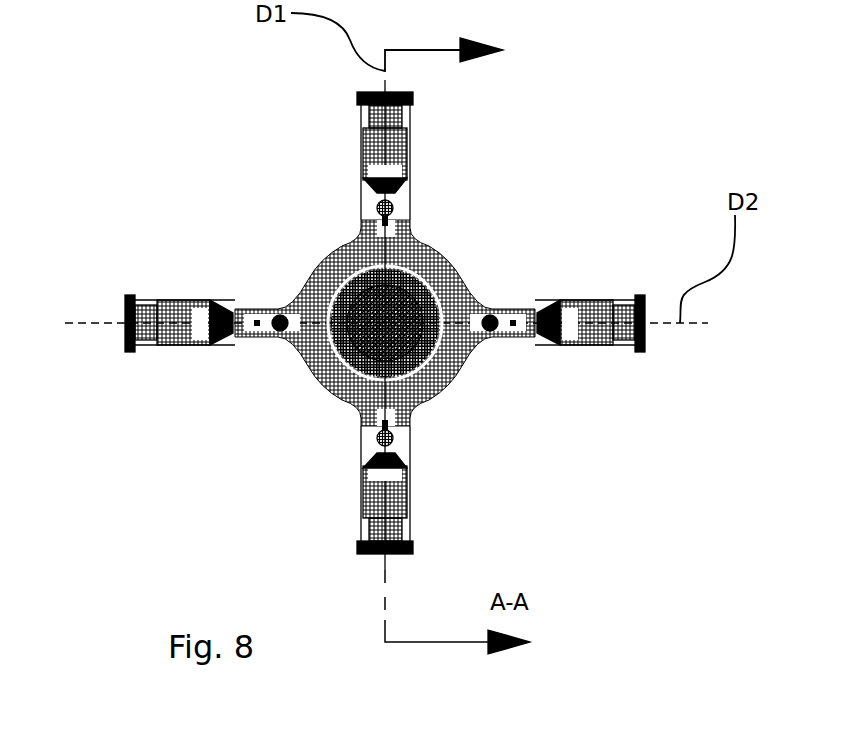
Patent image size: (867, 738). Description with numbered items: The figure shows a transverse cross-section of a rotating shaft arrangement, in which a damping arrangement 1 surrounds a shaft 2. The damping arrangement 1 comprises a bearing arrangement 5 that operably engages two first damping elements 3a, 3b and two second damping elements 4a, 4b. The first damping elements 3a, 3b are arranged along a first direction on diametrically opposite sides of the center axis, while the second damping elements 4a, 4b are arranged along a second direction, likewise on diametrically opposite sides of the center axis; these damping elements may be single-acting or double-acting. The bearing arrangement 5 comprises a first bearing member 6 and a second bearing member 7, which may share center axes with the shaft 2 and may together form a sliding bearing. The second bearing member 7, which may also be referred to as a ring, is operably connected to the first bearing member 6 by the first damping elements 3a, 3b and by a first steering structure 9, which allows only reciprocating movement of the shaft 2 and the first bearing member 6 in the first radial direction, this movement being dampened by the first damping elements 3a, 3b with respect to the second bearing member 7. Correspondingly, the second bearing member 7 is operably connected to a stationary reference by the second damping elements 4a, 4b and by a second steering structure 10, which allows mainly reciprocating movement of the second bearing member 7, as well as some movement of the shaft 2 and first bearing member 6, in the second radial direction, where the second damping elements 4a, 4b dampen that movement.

The damping arrangement 1 is at (168, 98).
The shaft 2 is at (396, 303).
The first damping element 3a is at (372, 147).
The first damping element 3b is at (383, 518).
The second damping element 4a is at (172, 302).
The second damping element 4b is at (602, 305).
The bearing arrangement 5 is at (305, 252).
The first bearing member 6 is at (420, 358).
The second bearing member 7 is at (340, 380).
The first steering structure 9 is at (405, 205).
The second steering structure 10 is at (257, 325).